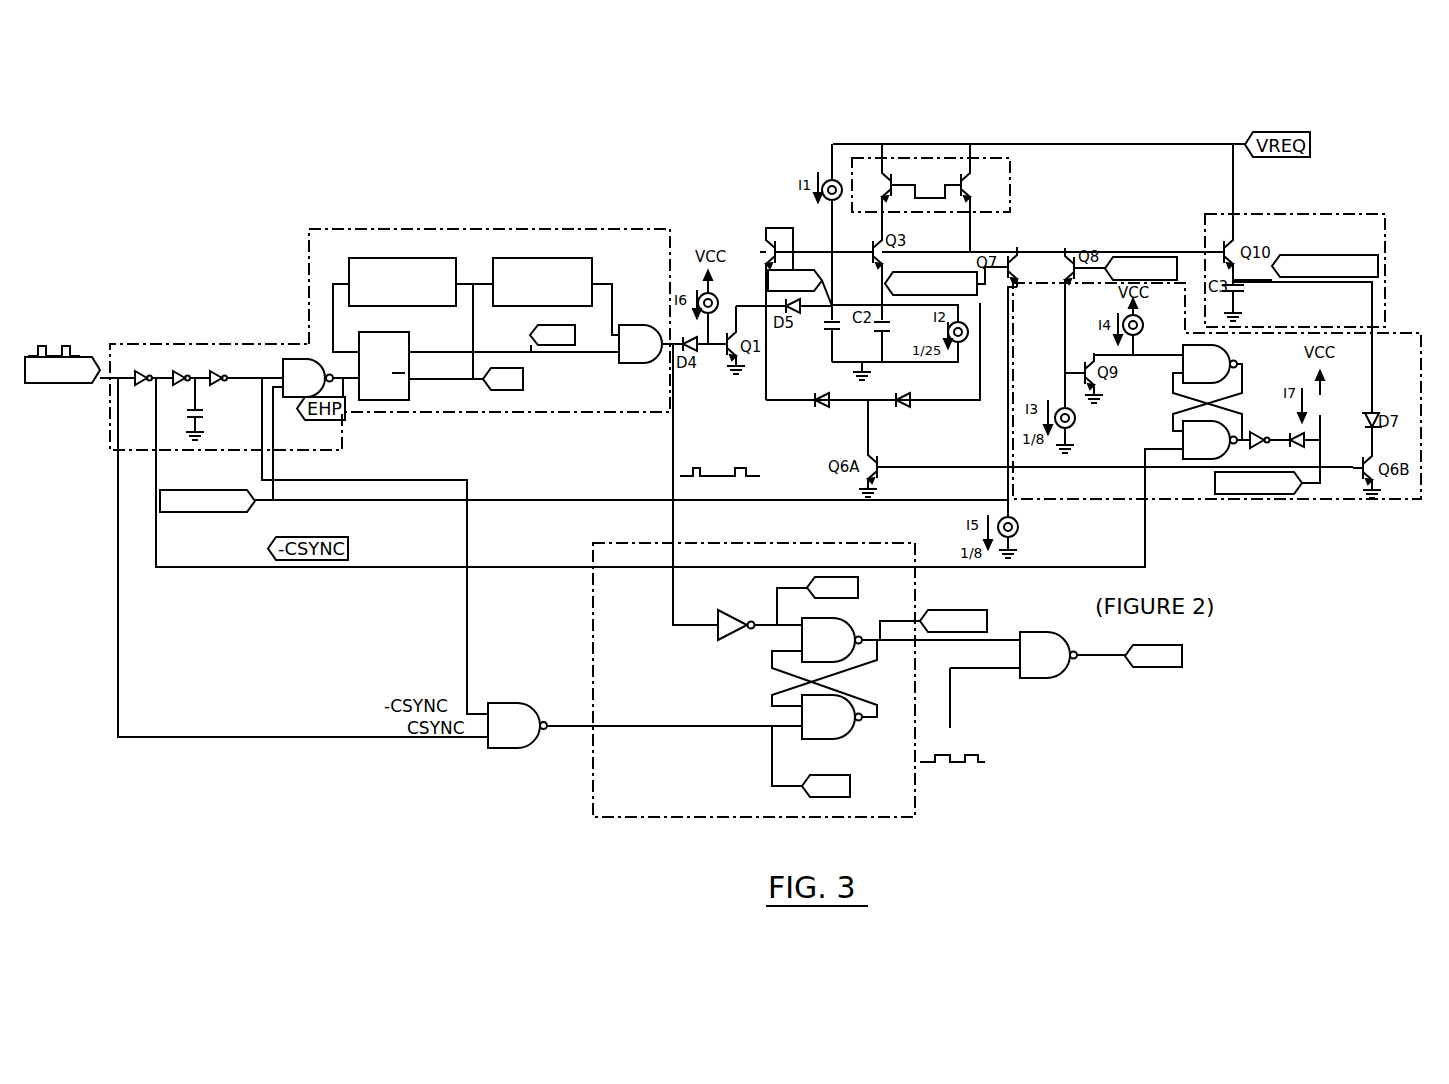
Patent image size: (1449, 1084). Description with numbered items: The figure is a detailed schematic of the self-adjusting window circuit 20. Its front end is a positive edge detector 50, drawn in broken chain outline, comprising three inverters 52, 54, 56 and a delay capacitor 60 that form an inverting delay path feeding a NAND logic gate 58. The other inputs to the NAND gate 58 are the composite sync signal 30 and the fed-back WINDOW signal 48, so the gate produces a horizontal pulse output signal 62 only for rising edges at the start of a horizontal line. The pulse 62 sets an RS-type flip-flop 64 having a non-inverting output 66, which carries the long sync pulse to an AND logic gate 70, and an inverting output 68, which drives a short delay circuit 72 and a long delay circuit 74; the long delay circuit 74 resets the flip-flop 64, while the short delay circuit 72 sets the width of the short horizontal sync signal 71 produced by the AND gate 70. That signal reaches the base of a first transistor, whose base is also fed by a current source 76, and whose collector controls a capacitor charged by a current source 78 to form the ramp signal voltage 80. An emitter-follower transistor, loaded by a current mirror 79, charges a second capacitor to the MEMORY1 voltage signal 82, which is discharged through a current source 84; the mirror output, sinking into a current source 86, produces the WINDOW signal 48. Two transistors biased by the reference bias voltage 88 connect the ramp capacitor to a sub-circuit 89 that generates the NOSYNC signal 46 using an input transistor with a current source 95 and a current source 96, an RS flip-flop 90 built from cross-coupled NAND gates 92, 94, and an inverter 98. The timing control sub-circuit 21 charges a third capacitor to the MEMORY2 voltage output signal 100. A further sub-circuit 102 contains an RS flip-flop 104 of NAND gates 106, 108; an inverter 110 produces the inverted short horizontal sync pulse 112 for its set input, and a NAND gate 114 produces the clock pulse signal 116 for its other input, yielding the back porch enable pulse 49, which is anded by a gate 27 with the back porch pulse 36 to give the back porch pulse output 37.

The self-adjusting window circuit 20 is at (688, 220).
The timing control sub-circuit 21 is at (1290, 214).
The NAND gate 27 is at (1066, 625).
The composite sync signal 30 is at (80, 356).
The back porch pulse 36 is at (955, 764).
The back porch pulse output 37 is at (1182, 654).
The NOSYNC signal 46 is at (1245, 495).
The WINDOW signal 48 is at (202, 491).
The back porch enable pulse 49 is at (985, 611).
The positive edge detector 50 is at (196, 344).
The inverter 52 is at (141, 371).
The inverter 54 is at (179, 371).
The inverter 56 is at (216, 371).
The NAND logic gate 58 is at (285, 359).
The delay capacitor 60 is at (200, 422).
The horizontal pulse output signal 62 is at (332, 372).
The RS-type flip-flop 64 is at (409, 341).
The non-inverting output 66 is at (432, 352).
The inverting output 68 is at (432, 380).
The AND logic gate 70 is at (645, 363).
The short horizontal sync signal 71 is at (764, 473).
The short delay circuit 72 is at (583, 258).
The long delay circuit 74 is at (431, 258).
The current source 76 is at (716, 303).
The current source 78 is at (840, 144).
The current mirror 79 is at (1005, 158).
The ramp signal voltage 80 is at (790, 266).
The MEMORY1 voltage signal 82 is at (945, 272).
The current source 84 is at (960, 345).
The current source 86 is at (1018, 531).
The reference bias voltage 88 is at (1145, 257).
The sub-circuit 89 is at (1406, 333).
The RS flip-flop 90 is at (1170, 402).
The NAND gate 92 is at (1224, 349).
The NAND gate 94 is at (1197, 459).
The current source 95 is at (1075, 422).
The current source 96 is at (1144, 325).
The inverter 98 is at (1262, 432).
The MEMORY2 voltage output signal 100 is at (1316, 255).
The sub-circuit 102 is at (900, 543).
The RS flip-flop 104 is at (752, 668).
The NAND gate 106 is at (850, 624).
The NAND gate 108 is at (855, 736).
The inverter 110 is at (744, 606).
The inverted short horizontal sync pulse 112 is at (842, 577).
The NAND gate 114 is at (542, 713).
The clock pulse signal 116 is at (850, 791).